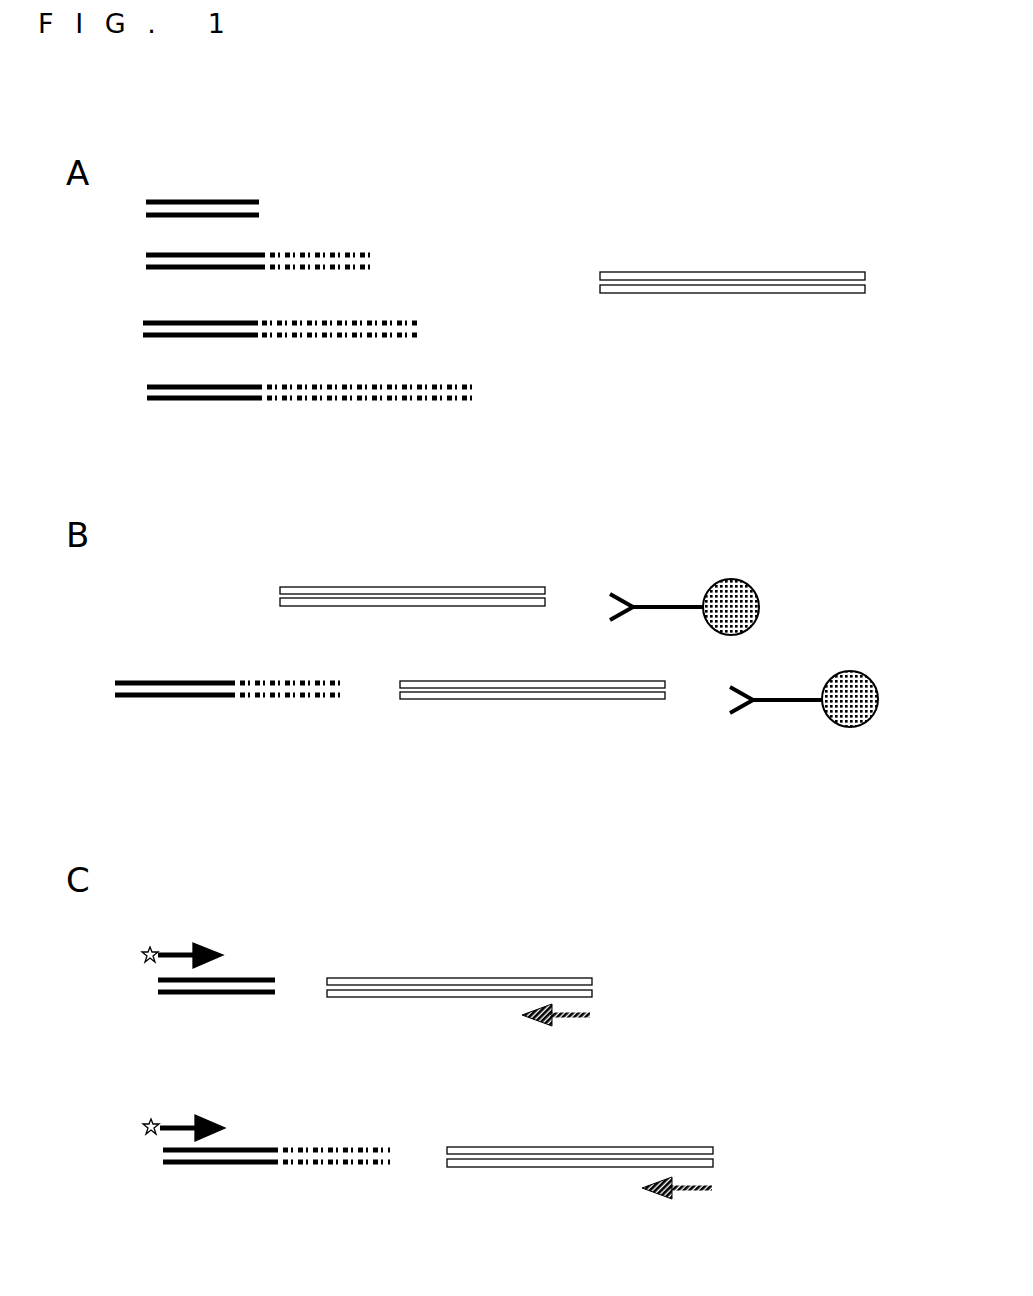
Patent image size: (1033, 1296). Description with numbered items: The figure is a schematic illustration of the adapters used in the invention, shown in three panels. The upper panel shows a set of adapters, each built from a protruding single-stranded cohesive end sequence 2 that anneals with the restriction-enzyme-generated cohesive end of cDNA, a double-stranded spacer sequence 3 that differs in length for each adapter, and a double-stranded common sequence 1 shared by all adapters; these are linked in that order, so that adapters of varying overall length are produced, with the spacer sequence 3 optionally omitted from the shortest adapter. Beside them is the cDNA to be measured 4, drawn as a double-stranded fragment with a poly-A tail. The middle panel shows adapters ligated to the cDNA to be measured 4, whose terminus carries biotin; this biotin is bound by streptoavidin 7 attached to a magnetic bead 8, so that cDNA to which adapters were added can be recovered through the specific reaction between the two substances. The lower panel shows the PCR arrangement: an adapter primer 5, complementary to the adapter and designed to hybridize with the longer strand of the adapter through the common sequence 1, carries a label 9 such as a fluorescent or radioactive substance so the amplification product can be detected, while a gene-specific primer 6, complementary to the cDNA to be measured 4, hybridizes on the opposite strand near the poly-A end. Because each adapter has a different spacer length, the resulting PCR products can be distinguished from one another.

The common sequence 1 is at (198, 202).
The cohesive end sequence 2 is at (305, 192).
The spacer sequence 3 is at (347, 253).
The cDNA to be measured 4 is at (680, 272).
The adapter primer 5 is at (200, 948).
The gene-specific primer 6 is at (570, 1020).
The streptoavidin 7 is at (657, 605).
The magnetic bead 8 is at (730, 578).
The label 9 is at (148, 952).